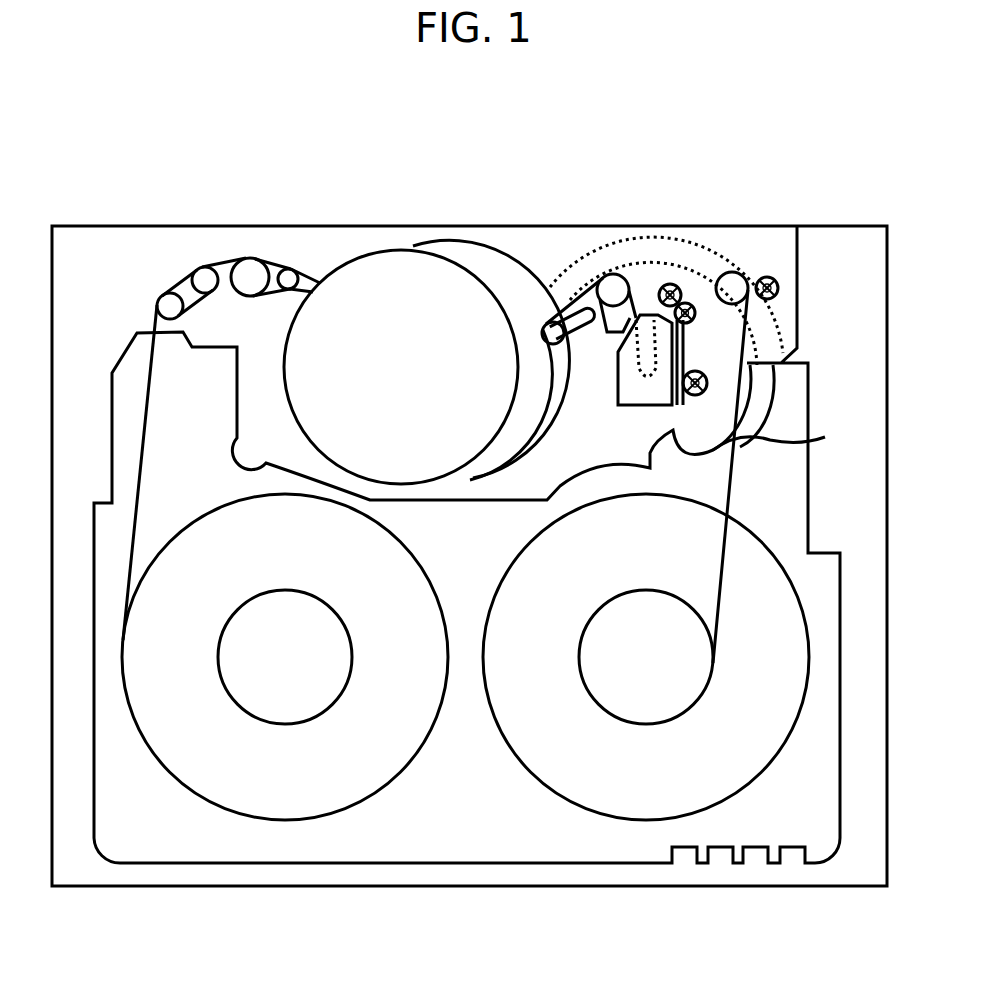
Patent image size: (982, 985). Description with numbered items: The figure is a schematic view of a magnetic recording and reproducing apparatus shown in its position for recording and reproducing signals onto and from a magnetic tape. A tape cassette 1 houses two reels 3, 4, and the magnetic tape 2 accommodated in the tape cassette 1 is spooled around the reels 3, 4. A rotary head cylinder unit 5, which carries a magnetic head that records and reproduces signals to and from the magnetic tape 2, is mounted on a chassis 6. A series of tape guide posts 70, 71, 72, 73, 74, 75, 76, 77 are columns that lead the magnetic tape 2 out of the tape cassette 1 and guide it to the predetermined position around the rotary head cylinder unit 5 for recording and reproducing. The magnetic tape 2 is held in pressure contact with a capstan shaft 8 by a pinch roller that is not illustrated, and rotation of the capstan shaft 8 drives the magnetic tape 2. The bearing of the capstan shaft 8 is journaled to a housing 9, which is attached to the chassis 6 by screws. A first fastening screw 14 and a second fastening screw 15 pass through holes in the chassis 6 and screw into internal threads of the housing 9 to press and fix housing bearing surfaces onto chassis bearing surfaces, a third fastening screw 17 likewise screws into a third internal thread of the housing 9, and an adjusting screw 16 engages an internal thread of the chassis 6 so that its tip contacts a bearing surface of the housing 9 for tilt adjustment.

The tape cassette 1 is at (222, 866).
The magnetic tape 2 is at (143, 418).
The reel 3 is at (287, 703).
The reel 4 is at (640, 688).
The rotary head cylinder unit 5 is at (485, 265).
The chassis 6 is at (107, 887).
The capstan shaft 8 is at (647, 388).
The housing 9 is at (627, 377).
The first fastening screw 14 is at (772, 282).
The second fastening screw 15 is at (707, 393).
The adjusting screw 16 is at (675, 288).
The third fastening screw 17 is at (697, 317).
The tape guide post 70 is at (163, 296).
The tape guide post 71 is at (200, 268).
The tape guide post 72 is at (248, 258).
The tape guide post 73 is at (292, 270).
The tape guide post 74 is at (556, 322).
The tape guide post 75 is at (614, 284).
The tape guide post 76 is at (637, 320).
The tape guide post 77 is at (740, 277).